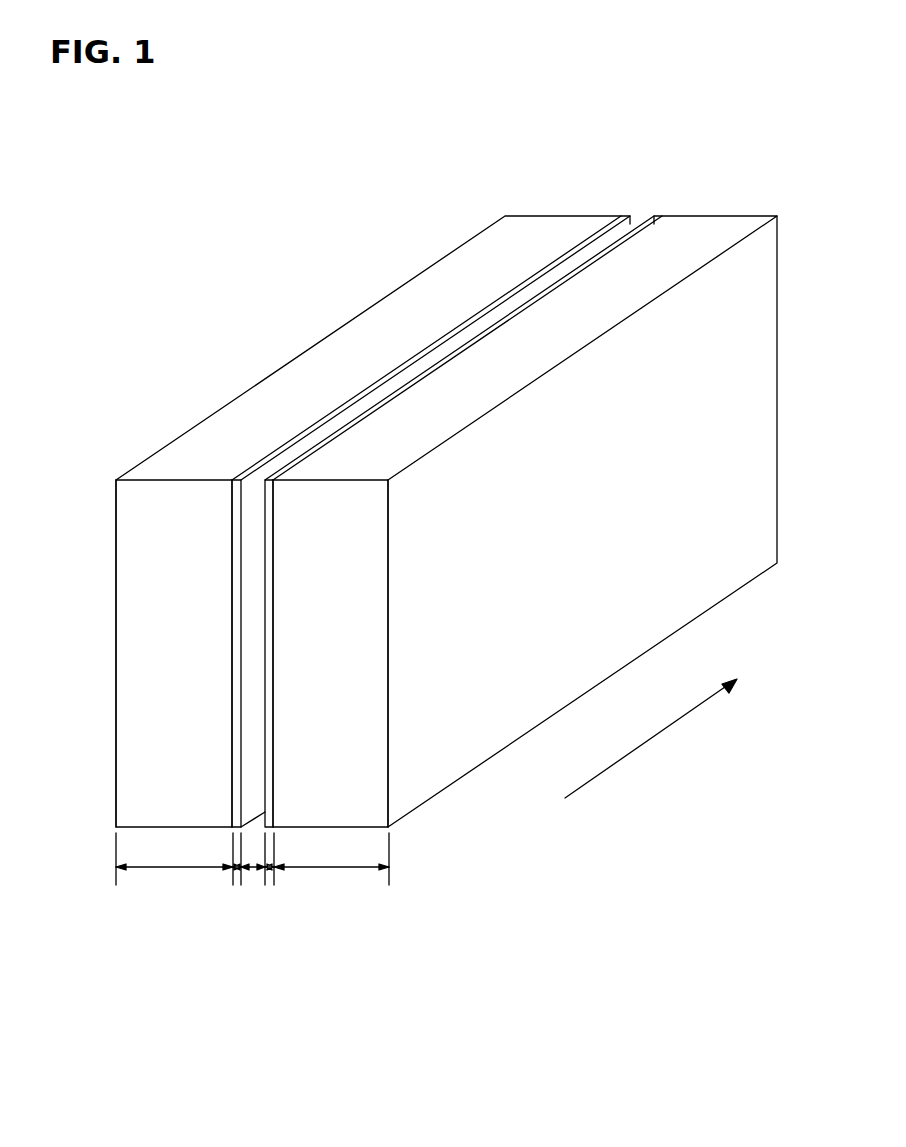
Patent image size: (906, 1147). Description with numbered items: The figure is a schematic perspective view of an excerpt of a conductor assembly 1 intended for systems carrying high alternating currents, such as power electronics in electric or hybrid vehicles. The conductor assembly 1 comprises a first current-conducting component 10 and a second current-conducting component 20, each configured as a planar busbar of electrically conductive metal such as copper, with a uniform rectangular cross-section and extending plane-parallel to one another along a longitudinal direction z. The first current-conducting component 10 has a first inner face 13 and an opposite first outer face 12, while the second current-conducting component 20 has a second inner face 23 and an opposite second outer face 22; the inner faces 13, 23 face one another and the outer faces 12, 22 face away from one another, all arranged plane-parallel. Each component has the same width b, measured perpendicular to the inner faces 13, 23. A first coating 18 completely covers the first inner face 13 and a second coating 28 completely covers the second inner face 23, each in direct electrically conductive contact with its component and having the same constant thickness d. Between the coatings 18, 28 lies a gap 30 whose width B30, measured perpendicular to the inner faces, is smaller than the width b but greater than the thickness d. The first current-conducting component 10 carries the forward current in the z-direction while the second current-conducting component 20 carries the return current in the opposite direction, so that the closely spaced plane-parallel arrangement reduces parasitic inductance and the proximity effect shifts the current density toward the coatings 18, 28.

The conductor assembly 1 is at (352, 298).
The first current-conducting component 10 is at (157, 502).
The first outer face 12 is at (116, 534).
The first inner face 13 is at (235, 533).
The first coating 18 is at (232, 649).
The second current-conducting component 20 is at (347, 500).
The second outer face 22 is at (389, 540).
The second inner face 23 is at (267, 505).
The second coating 28 is at (270, 637).
The gap 30 is at (255, 702).
The longitudinal direction z is at (650, 742).
The width b is at (158, 870).
The thickness d is at (237, 870).
The width of the gap B30 is at (253, 870).